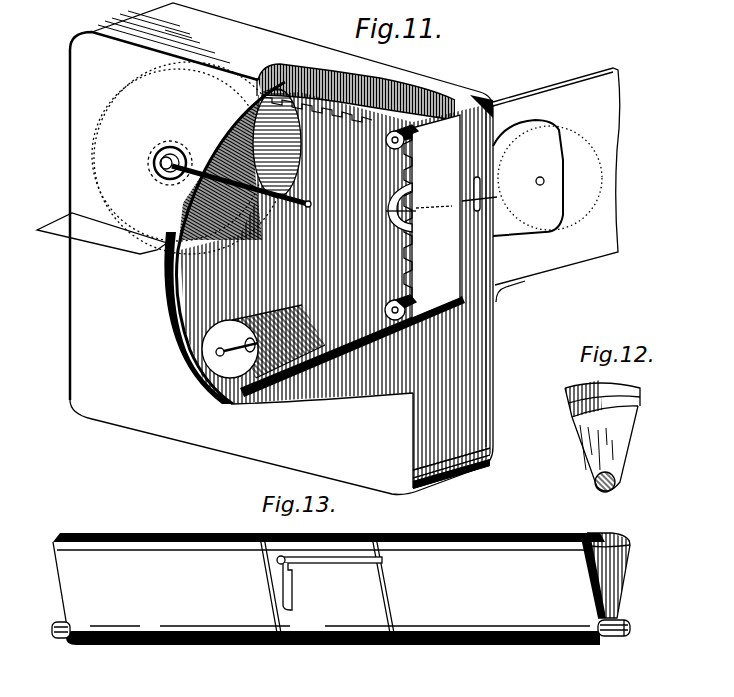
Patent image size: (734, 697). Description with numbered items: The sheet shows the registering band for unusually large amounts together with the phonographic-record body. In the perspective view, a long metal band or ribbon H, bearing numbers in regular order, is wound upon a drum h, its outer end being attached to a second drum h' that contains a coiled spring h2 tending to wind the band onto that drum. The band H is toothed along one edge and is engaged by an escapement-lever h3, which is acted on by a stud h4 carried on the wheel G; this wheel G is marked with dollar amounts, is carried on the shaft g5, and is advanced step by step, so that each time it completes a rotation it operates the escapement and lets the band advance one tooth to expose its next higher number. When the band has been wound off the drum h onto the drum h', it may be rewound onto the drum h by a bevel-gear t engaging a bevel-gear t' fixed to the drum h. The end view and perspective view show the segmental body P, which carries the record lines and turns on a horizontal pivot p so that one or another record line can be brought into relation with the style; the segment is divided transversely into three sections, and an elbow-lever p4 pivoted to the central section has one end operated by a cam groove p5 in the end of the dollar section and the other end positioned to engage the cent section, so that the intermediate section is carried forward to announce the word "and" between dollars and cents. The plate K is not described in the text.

In FIG. 11, the registering band H is at (288, 243).
In FIG. 11, the drum h is at (170, 150).
In FIG. 11, the bevel-gear t is at (233, 188).
In FIG. 11, the bevel-gear t' is at (175, 144).
In FIG. 11, the second drum h' is at (263, 341).
In FIG. 11, the coiled spring h2 is at (208, 350).
In FIG. 11, the escapement-lever h3 is at (388, 212).
In FIG. 11, the stud h4 is at (490, 208).
In FIG. 11, the indexing plate K is at (432, 216).
In FIG. 11, the wheel G is at (547, 178).
In FIG. 11, the shaft g5 is at (540, 185).
In FIG. 12, the segmental body P is at (590, 435).
In FIG. 13, the segmental body P is at (182, 523).
In FIG. 12, the horizontal pivot p is at (600, 490).
In FIG. 13, the horizontal pivot p is at (56, 640).
In FIG. 13, the elbow-lever p4 is at (280, 568).
In FIG. 12, the cam groove p5 is at (637, 410).